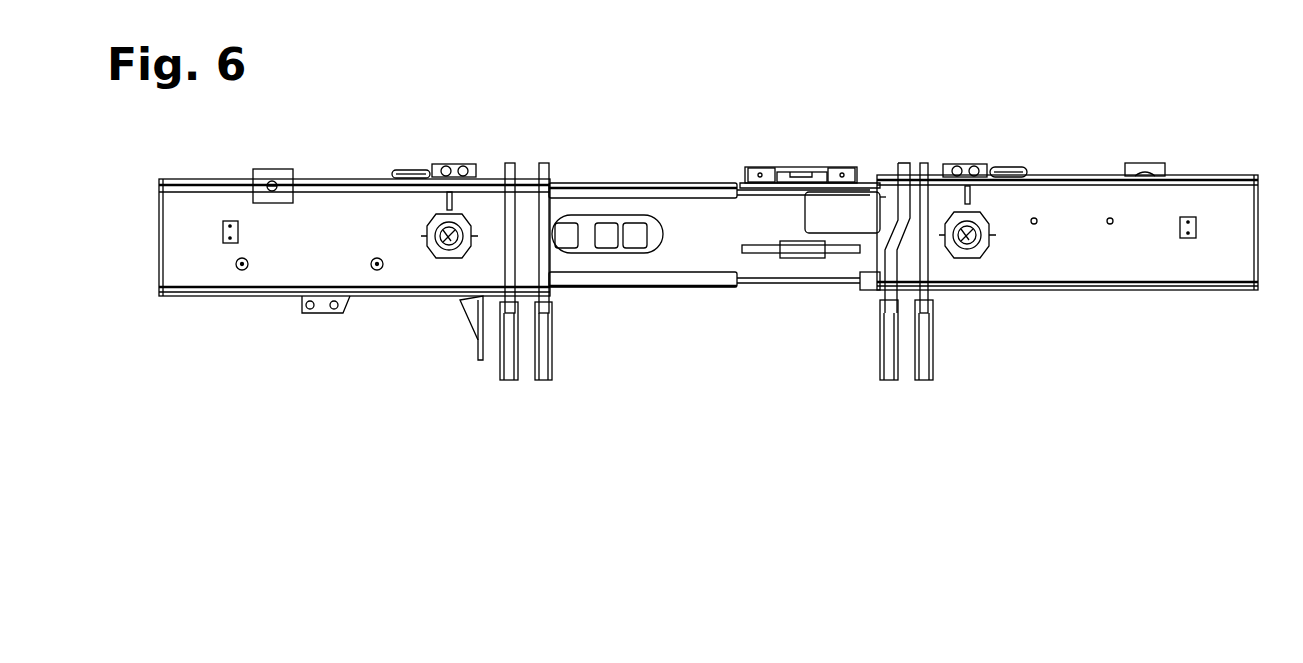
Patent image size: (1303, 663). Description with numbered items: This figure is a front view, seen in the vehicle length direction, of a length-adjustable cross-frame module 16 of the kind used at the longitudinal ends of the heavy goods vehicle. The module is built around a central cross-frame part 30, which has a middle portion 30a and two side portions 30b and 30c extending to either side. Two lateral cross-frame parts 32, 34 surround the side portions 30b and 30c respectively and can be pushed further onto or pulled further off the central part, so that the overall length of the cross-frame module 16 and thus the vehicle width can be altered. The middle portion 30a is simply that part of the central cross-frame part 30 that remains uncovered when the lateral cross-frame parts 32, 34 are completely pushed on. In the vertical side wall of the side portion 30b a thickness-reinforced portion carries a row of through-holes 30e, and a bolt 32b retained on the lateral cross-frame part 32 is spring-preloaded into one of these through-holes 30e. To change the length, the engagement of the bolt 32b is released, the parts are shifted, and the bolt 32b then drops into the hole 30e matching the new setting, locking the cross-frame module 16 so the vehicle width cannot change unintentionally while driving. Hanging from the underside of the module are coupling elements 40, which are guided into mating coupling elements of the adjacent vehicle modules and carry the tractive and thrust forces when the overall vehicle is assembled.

The cross-frame module 16 is at (1193, 133).
The central cross-frame part 30 is at (863, 187).
The middle portion 30a is at (757, 182).
The side portion 30b is at (574, 190).
The side portion 30c is at (1000, 177).
The through-holes 30e is at (606, 240).
The lateral cross-frame part 32 is at (343, 178).
The bolt 32b is at (449, 250).
The lateral cross-frame part 34 is at (1076, 178).
The coupling elements 40 is at (542, 368).